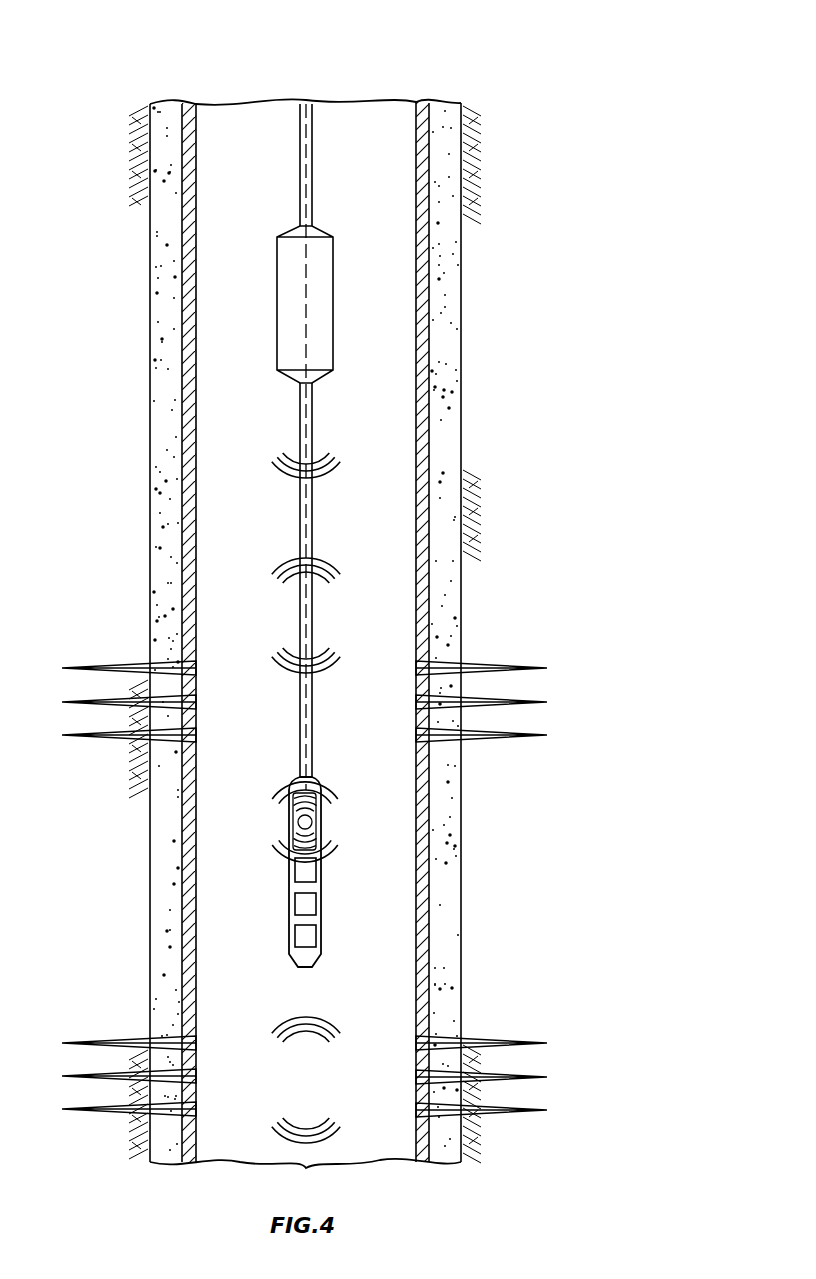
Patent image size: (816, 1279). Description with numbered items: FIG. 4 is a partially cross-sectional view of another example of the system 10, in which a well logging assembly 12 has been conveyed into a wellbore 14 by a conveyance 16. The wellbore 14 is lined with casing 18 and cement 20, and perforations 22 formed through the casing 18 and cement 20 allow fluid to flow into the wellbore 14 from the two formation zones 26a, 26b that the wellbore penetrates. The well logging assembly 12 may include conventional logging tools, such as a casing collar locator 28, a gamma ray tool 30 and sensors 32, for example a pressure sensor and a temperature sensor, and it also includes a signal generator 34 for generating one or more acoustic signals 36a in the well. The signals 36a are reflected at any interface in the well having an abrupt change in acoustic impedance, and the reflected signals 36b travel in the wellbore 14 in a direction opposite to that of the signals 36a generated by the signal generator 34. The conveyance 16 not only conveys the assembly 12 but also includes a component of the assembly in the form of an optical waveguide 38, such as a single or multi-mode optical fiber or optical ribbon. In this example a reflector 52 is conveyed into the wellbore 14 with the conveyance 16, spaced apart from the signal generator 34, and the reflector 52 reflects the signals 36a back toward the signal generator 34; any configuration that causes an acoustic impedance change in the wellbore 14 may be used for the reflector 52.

The system 10 is at (112, 70).
The well logging assembly 12 is at (310, 872).
The wellbore 14 is at (416, 358).
The conveyance 16 is at (298, 137).
The casing 18 is at (182, 888).
The cement 20 is at (145, 925).
The perforations 22 is at (113, 662).
The formation zone 26a is at (680, 1087).
The formation zone 26b is at (660, 709).
The casing collar locator 28 is at (293, 933).
The gamma ray tool 30 is at (293, 898).
The sensors 32 is at (293, 870).
The signal generator 34 is at (293, 822).
The acoustic signals 36a is at (318, 566).
The reflected signals 36b is at (287, 478).
The optical waveguide 38 is at (312, 166).
The reflector 52 is at (333, 287).